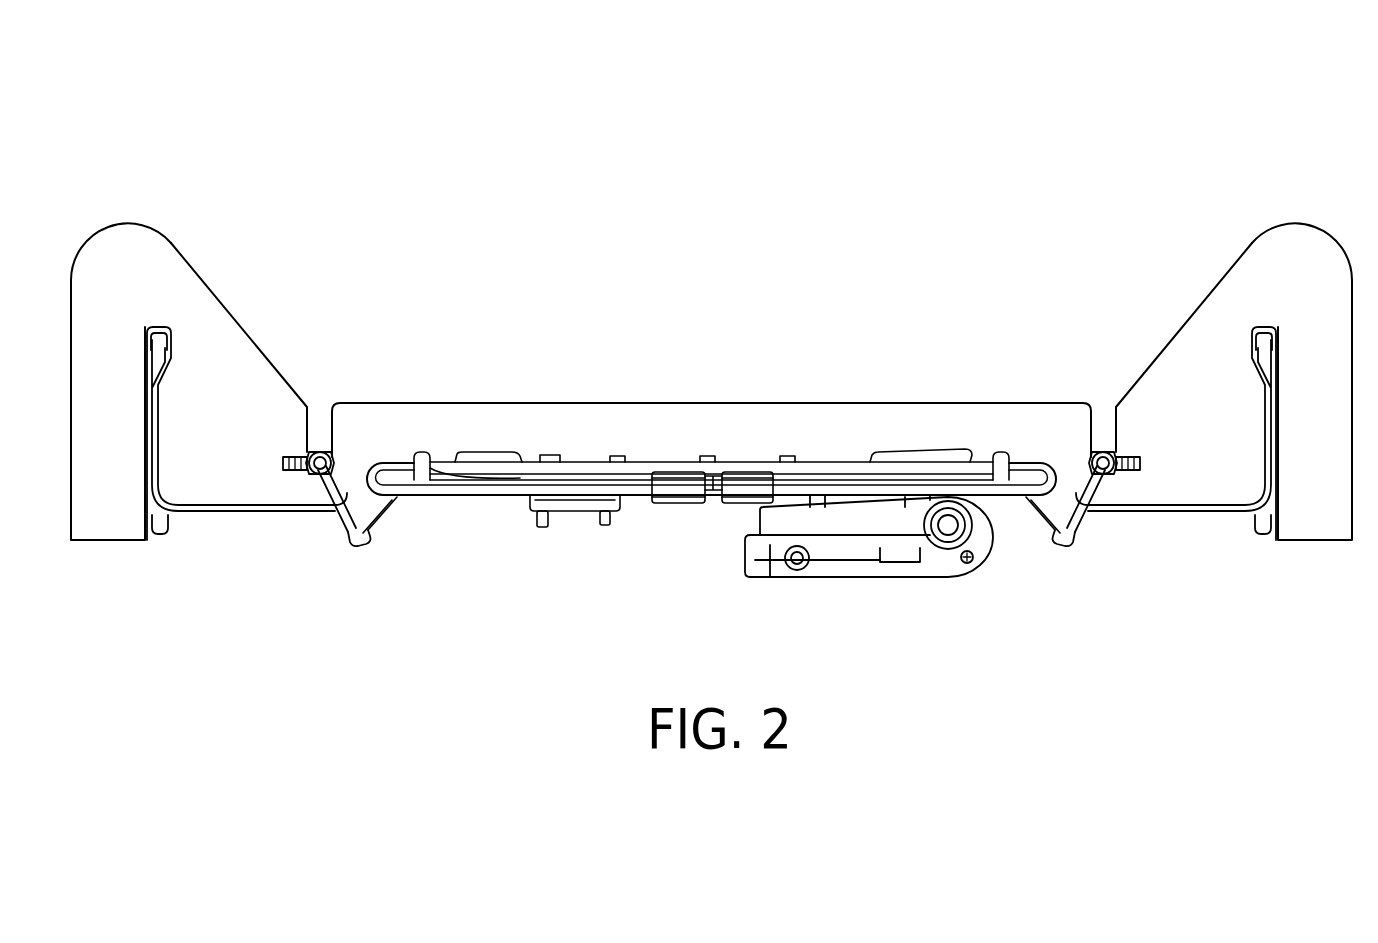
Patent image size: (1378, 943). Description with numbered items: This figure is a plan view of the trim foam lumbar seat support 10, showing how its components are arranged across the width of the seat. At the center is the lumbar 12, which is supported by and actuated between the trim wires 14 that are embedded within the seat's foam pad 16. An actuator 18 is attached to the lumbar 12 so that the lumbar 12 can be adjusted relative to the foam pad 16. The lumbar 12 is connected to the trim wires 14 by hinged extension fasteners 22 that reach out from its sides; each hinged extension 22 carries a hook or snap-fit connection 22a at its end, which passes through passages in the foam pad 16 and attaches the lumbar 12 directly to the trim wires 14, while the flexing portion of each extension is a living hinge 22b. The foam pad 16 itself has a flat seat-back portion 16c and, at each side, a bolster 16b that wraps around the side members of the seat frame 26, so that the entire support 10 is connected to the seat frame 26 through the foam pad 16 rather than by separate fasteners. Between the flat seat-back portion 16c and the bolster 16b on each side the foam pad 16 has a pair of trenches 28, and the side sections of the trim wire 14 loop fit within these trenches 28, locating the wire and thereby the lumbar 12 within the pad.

The trim foam lumbar seat support 10 is at (592, 128).
The lumbar 12 is at (681, 520).
The trim wires 14 is at (1019, 517).
The foam pad 16 is at (1291, 200).
The bolster 16b is at (1208, 317).
The flat seat-back portion 16c is at (672, 413).
The actuator 18 is at (818, 588).
The hinged extension fasteners 22 is at (390, 515).
The hook or snap-fit connection 22a is at (300, 487).
The living hinge 22b is at (362, 550).
The seat frame 26 is at (163, 548).
The trenches 28 is at (318, 422).